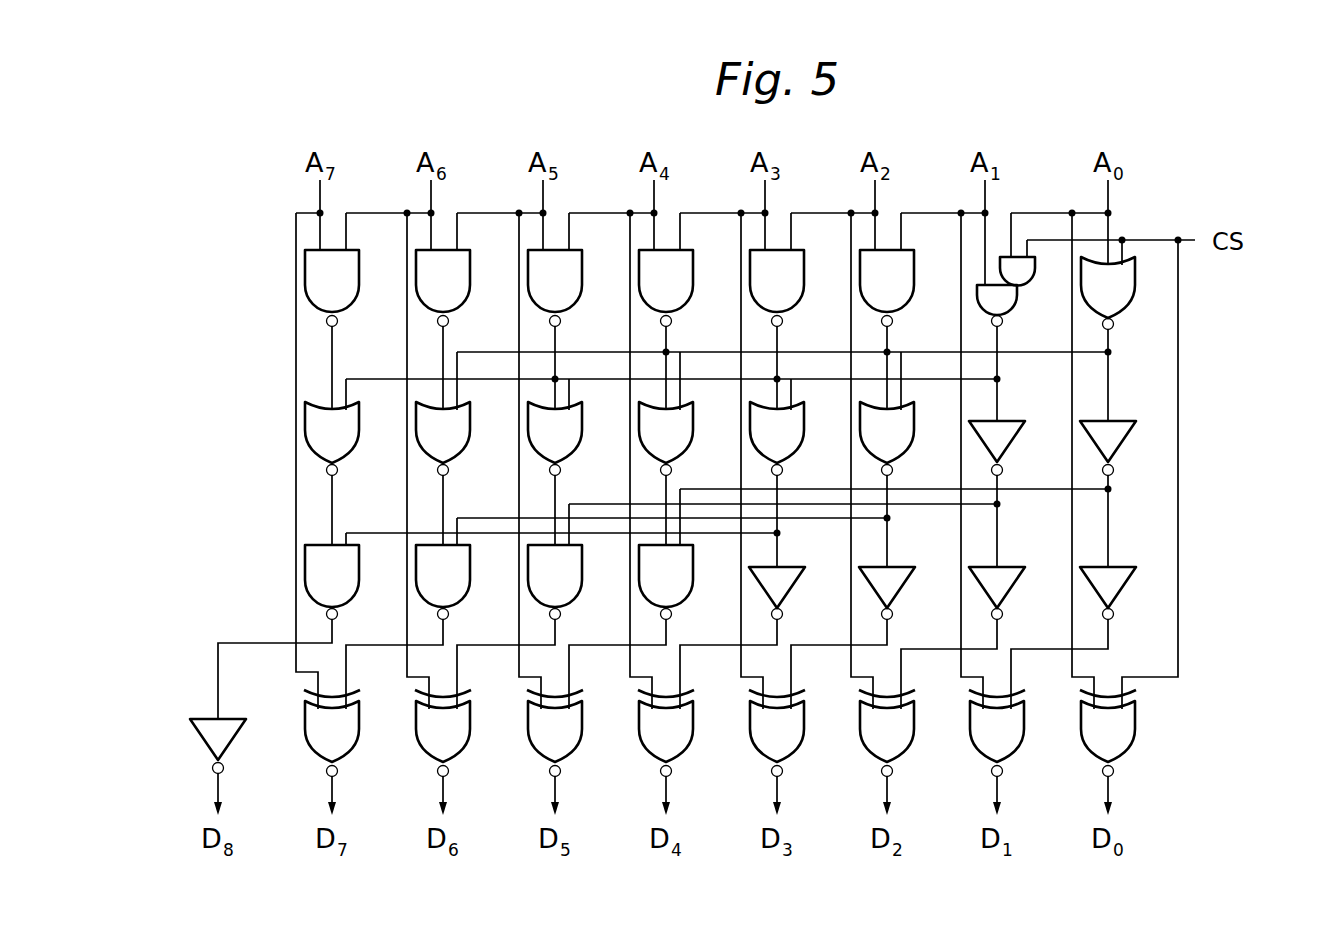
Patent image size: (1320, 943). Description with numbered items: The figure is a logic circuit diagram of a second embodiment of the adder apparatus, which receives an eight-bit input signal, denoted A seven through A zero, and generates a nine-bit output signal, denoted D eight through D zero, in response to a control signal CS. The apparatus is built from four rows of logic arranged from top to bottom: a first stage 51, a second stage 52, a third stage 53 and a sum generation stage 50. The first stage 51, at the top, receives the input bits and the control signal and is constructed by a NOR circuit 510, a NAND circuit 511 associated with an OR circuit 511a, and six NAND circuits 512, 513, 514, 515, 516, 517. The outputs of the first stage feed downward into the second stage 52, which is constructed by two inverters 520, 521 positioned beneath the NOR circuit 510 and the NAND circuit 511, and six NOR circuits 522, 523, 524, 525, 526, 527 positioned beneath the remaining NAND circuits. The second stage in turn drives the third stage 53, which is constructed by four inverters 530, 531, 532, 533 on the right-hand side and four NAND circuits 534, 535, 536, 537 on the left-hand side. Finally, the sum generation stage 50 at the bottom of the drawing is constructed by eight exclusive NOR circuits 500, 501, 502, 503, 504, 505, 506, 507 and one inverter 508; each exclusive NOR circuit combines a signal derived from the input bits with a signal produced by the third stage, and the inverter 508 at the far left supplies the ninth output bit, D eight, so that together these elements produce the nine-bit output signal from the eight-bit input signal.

The sum generation stage 50 is at (734, 739).
The first stage 51 is at (792, 257).
The second stage 52 is at (792, 444).
The third stage 53 is at (792, 587).
The exclusive NOR circuit 500 is at (1133, 748).
The exclusive NOR circuit 501 is at (1022, 748).
The exclusive NOR circuit 502 is at (912, 748).
The exclusive NOR circuit 503 is at (802, 748).
The exclusive NOR circuit 504 is at (691, 748).
The exclusive NOR circuit 505 is at (580, 748).
The exclusive NOR circuit 506 is at (468, 748).
The exclusive NOR circuit 507 is at (357, 748).
The inverter 508 is at (228, 737).
The NOR circuit 510 is at (1134, 302).
The NAND circuit 511 is at (1016, 302).
The OR circuit 511a is at (1036, 270).
The NAND circuit 512 is at (913, 297).
The NAND circuit 513 is at (803, 297).
The NAND circuit 514 is at (692, 297).
The NAND circuit 515 is at (581, 297).
The NAND circuit 516 is at (469, 297).
The NAND circuit 517 is at (358, 297).
The inverter 520 is at (1118, 439).
The inverter 521 is at (1007, 439).
The NOR circuit 522 is at (912, 447).
The NOR circuit 523 is at (802, 447).
The NOR circuit 524 is at (691, 447).
The NOR circuit 525 is at (580, 447).
The NOR circuit 526 is at (468, 447).
The NOR circuit 527 is at (357, 447).
The inverter 530 is at (1118, 585).
The inverter 531 is at (1007, 585).
The inverter 532 is at (897, 585).
The inverter 533 is at (787, 585).
The NAND circuit 534 is at (692, 592).
The NAND circuit 535 is at (581, 592).
The NAND circuit 536 is at (469, 592).
The NAND circuit 537 is at (358, 592).